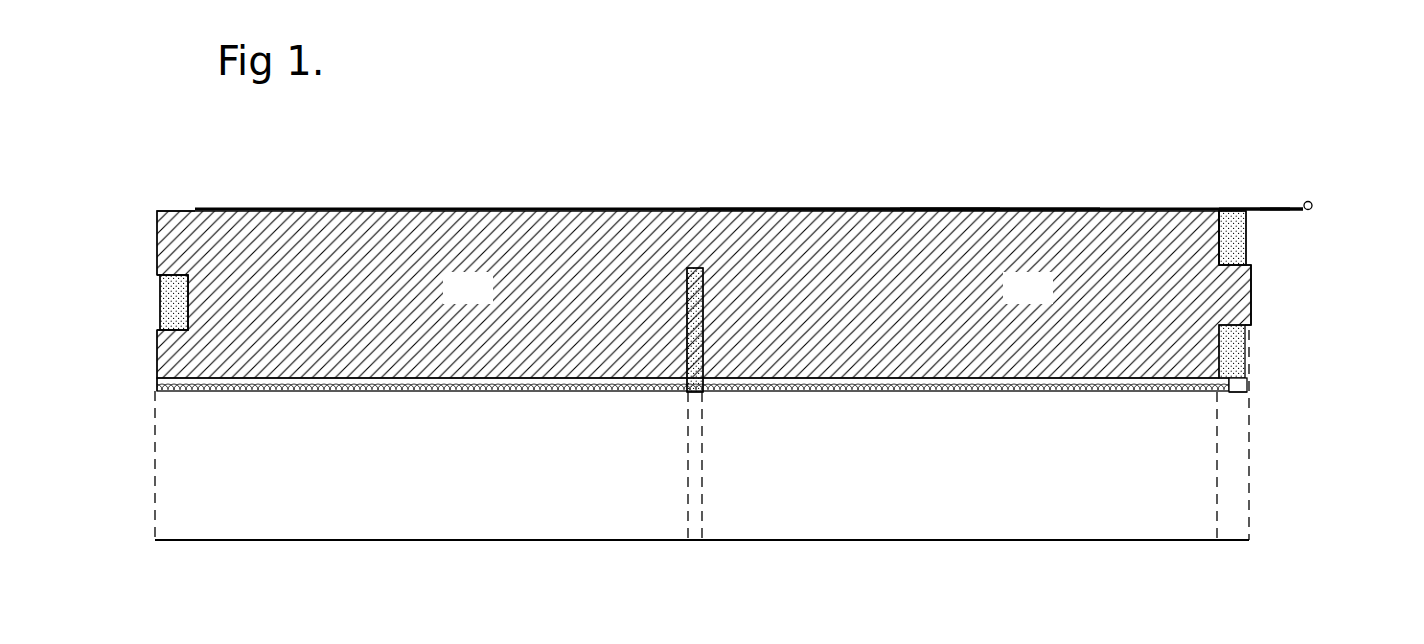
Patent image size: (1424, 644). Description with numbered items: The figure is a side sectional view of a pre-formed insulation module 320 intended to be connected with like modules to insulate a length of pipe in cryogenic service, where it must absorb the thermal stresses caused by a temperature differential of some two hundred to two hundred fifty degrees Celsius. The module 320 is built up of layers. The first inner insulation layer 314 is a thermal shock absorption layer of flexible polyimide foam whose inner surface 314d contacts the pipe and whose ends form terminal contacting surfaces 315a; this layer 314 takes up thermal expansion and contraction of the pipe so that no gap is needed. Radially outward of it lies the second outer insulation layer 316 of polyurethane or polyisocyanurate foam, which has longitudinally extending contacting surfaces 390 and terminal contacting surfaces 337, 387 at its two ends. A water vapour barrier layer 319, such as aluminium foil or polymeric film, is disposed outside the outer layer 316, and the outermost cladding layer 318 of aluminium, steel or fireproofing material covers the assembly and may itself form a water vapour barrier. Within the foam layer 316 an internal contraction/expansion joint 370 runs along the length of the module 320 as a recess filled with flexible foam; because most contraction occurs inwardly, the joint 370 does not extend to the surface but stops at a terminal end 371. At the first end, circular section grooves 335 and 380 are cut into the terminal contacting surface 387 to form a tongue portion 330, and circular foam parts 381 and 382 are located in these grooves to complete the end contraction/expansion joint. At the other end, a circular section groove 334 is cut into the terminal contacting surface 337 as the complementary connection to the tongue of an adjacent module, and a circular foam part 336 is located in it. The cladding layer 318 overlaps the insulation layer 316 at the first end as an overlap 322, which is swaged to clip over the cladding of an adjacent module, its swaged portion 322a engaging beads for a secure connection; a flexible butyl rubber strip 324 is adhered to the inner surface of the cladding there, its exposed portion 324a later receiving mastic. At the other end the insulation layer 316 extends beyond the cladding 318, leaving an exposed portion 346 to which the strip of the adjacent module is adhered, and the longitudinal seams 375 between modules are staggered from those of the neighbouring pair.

The first inner insulation layer 314 is at (402, 391).
The inner surface 314d is at (875, 391).
The terminal contacting surfaces 315a is at (1230, 393).
The second outer insulation layer 316 is at (488, 300).
The cladding layer 318 is at (977, 207).
The water vapour barrier layer 319 is at (341, 208).
The insulation module 320 is at (837, 198).
The overlap portion 322 is at (1283, 208).
The swaged portion 322a is at (1315, 204).
The flexible strip 324 is at (1228, 208).
The exposed portion of strip 324a is at (1272, 208).
The tongue portion 330 is at (1236, 286).
The circular section groove 334 is at (150, 315).
The circular section groove 335 is at (1236, 225).
The circular foam part 336 is at (160, 288).
The terminal contacting surface 337 is at (157, 364).
The exposed portion 346 is at (157, 210).
The internal contraction/expansion joint 370 is at (706, 313).
The terminal end 371 is at (695, 268).
The longitudinal seams 375 is at (1249, 541).
The circular section groove 380 is at (1248, 392).
The circular foam part 381 is at (1237, 263).
The circular foam part 382 is at (1248, 355).
The terminal contacting surface 387 is at (1258, 322).
The longitudinally extending contacting surfaces 390 is at (1213, 208).